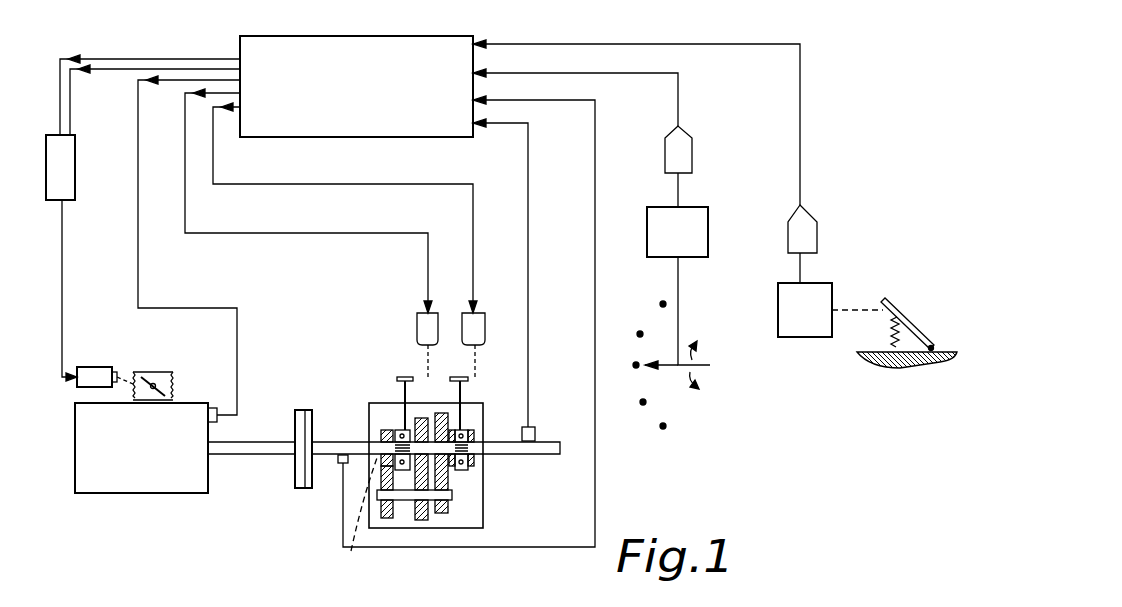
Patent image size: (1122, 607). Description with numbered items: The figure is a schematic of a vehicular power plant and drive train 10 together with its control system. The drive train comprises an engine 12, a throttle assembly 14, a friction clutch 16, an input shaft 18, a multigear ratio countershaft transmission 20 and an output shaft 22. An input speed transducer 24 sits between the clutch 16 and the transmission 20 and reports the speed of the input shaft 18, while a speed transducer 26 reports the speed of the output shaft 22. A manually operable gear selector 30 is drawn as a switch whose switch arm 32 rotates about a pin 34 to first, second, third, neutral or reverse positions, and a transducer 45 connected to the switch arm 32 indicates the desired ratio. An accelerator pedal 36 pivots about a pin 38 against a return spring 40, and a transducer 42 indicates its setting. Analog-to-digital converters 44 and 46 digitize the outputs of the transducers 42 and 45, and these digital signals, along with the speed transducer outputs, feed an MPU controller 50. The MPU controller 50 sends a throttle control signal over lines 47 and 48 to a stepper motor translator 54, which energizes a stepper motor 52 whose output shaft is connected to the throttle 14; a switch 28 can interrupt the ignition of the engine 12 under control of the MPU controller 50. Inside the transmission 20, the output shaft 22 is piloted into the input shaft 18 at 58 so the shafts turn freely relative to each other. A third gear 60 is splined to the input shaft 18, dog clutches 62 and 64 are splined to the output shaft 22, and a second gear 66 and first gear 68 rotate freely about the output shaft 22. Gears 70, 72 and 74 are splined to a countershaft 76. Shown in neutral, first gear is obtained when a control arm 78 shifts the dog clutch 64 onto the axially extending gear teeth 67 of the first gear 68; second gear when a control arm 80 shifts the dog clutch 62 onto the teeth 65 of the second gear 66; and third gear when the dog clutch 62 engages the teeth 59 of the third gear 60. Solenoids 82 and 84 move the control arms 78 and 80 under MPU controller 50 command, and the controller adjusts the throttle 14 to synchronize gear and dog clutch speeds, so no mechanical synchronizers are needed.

The vehicular power plant and drive train 10 is at (293, 322).
The engine 12 is at (150, 490).
The throttle assembly 14 is at (173, 380).
The friction clutch 16 is at (295, 478).
The input shaft 18 is at (327, 455).
The multigear ratio countershaft transmission 20 is at (463, 530).
The output shaft 22 is at (525, 453).
The input speed transducer 24 is at (341, 466).
The speed transducer 26 is at (538, 433).
The switch 28 is at (220, 411).
The gear selector 30 is at (691, 350).
The switch arm 32 is at (670, 368).
The pin 34 is at (710, 365).
The accelerator pedal 36 is at (902, 310).
The pin 38 is at (930, 366).
The return spring 40 is at (877, 336).
The transducer 42 is at (820, 292).
The analog-to-digital converter 44 is at (810, 225).
The transducer 45 is at (700, 228).
The analog-to-digital converter 46 is at (688, 150).
The line 47 is at (108, 72).
The line 48 is at (128, 58).
The MPU controller 50 is at (415, 137).
The stepper motor 52 is at (99, 372).
The stepper motor translator 54 is at (66, 178).
The pilot connection 58 is at (355, 517).
The axially extending gear teeth 59 is at (402, 502).
The third gear 60 is at (383, 438).
The dog clutch 62 is at (413, 432).
The dog clutch 64 is at (462, 438).
The axially extending gear teeth 65 is at (404, 410).
The second gear 66 is at (436, 416).
The axially extending gear teeth 67 is at (458, 470).
The first gear 68 is at (470, 405).
The gear 70 is at (390, 520).
The gear 72 is at (430, 520).
The gear 74 is at (455, 515).
The countershaft 76 is at (448, 508).
The control arm 78 is at (463, 380).
The control arm 80 is at (397, 412).
The solenoid 82 is at (476, 325).
The solenoid 84 is at (420, 326).